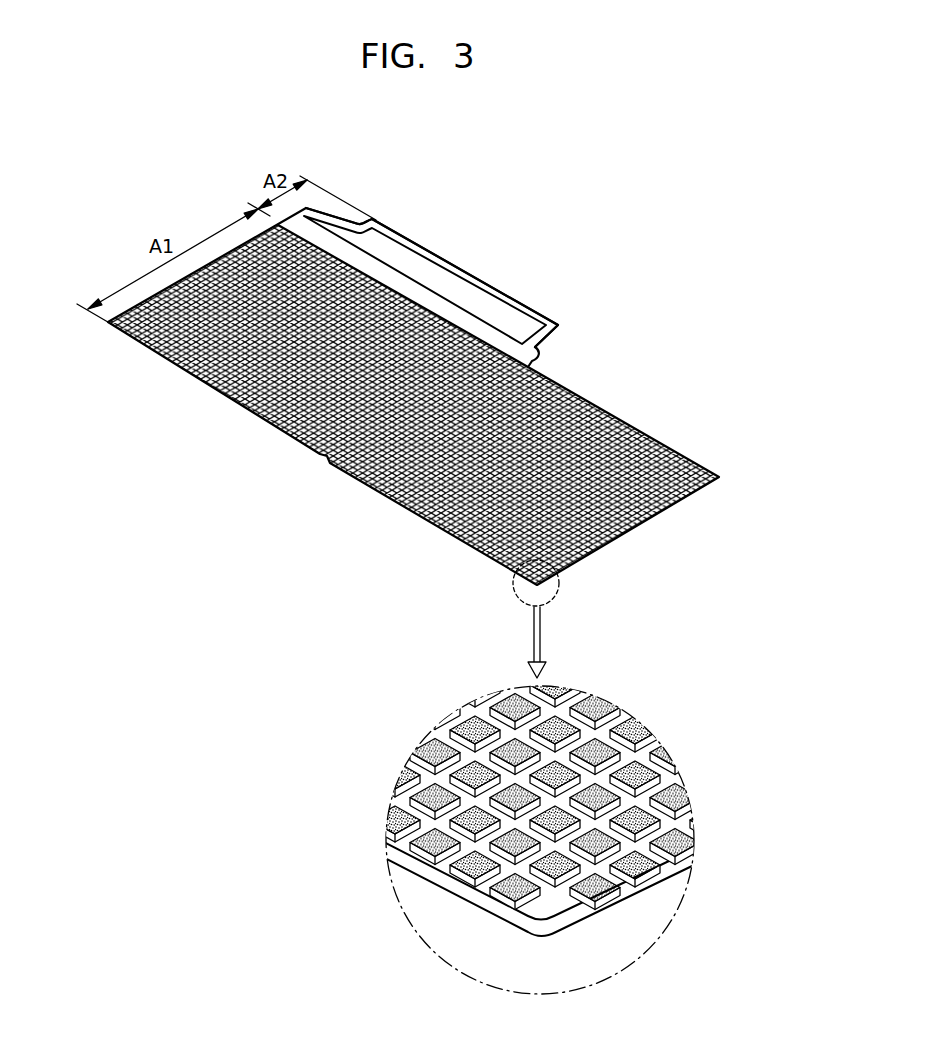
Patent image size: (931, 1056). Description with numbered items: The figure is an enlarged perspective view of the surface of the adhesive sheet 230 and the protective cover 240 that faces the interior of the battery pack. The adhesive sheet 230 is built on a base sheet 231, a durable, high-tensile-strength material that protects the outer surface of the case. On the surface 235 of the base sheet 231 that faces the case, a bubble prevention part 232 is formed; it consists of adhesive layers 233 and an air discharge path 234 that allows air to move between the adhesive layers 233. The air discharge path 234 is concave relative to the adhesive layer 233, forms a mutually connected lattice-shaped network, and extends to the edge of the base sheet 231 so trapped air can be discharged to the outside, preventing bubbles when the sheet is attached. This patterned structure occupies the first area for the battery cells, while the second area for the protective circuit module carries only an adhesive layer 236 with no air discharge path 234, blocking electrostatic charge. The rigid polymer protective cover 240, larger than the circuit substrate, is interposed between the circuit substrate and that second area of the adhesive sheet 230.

The adhesive sheet 230 is at (243, 455).
The protective cover 240 is at (446, 280).
The adhesive layer 236 is at (480, 330).
The base sheet 231 is at (632, 898).
The bubble prevention part 232 is at (592, 791).
The adhesive layer 233 is at (672, 765).
The air discharge path 234 is at (638, 800).
The surface 235 is at (552, 912).